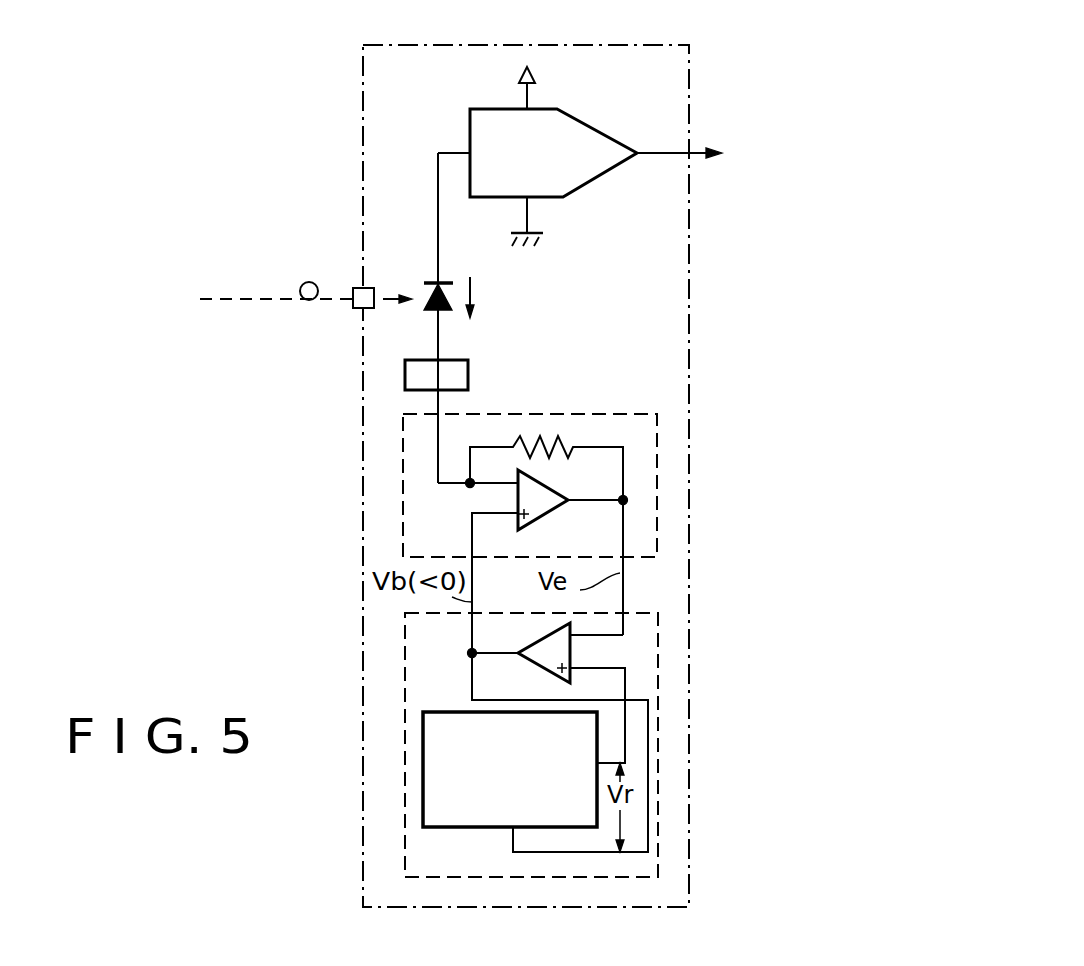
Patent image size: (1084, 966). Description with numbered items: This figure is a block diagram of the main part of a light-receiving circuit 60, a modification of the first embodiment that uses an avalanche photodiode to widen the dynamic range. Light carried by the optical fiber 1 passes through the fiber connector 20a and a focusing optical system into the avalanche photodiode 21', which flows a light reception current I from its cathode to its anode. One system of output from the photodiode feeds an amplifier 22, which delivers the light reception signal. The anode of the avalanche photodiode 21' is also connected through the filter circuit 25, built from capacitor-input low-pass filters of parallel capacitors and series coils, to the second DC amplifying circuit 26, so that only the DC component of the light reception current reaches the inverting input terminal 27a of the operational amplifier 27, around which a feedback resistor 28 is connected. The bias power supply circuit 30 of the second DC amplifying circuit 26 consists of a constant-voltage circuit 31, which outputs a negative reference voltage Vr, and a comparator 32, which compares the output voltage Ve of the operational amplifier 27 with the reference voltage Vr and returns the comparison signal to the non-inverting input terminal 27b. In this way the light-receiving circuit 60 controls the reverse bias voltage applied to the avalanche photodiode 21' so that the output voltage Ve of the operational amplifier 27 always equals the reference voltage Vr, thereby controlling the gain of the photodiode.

The optical fiber 1 is at (282, 298).
The fiber connector 20a is at (363, 333).
The avalanche photodiode 21' is at (436, 256).
The amplifier 22 is at (596, 134).
The filter circuit 25 is at (468, 377).
The second DC amplifying circuit 26 is at (552, 413).
The operational amplifier 27 is at (550, 513).
The inverting input terminal 27a is at (470, 483).
The non-inverting input terminal 27b is at (472, 540).
The feedback resistor 28 is at (565, 440).
The bias power supply circuit 30 is at (663, 620).
The constant-voltage circuit 31 is at (433, 711).
The comparator 32 is at (525, 665).
The light-receiving circuit 60 is at (686, 92).